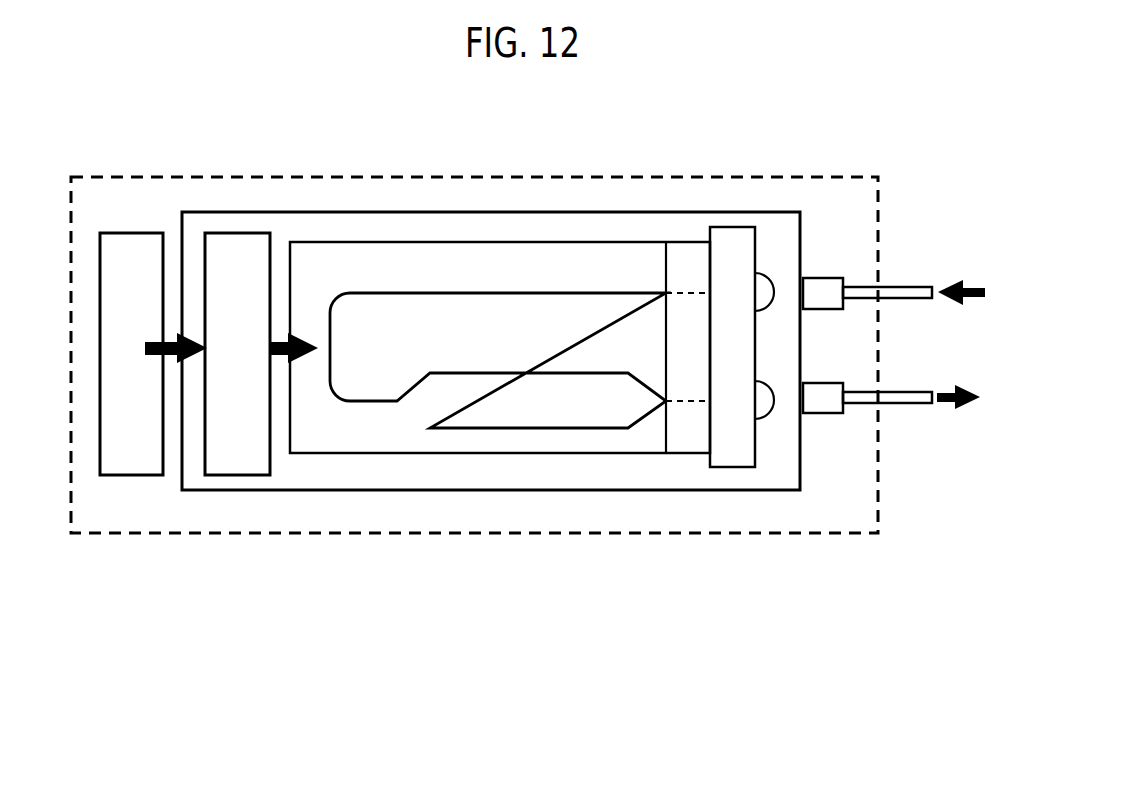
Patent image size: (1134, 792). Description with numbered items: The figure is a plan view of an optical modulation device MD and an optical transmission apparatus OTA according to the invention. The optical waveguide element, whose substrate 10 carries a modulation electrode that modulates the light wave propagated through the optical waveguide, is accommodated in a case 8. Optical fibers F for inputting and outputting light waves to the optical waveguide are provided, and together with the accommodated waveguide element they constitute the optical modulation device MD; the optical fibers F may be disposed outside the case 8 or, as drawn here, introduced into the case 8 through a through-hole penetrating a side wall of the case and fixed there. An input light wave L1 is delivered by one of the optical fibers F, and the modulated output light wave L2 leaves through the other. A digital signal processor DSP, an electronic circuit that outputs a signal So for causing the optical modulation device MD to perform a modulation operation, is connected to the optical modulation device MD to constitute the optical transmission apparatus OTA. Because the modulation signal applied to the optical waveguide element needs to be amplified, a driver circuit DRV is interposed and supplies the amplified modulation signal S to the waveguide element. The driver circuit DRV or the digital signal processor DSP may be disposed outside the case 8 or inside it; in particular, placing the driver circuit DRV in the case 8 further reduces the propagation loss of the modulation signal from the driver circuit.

The optical transmission apparatus OTA is at (240, 535).
The optical modulation device MD is at (456, 491).
The digital signal processor DSP is at (128, 237).
The driver circuit DRV is at (233, 235).
The input signal So is at (166, 337).
The modulation signal S is at (294, 337).
The substrate 10 is at (452, 243).
The case 8 is at (552, 212).
The optical fibers F is at (855, 285).
The input light L1 is at (961, 275).
The output light L2 is at (960, 415).